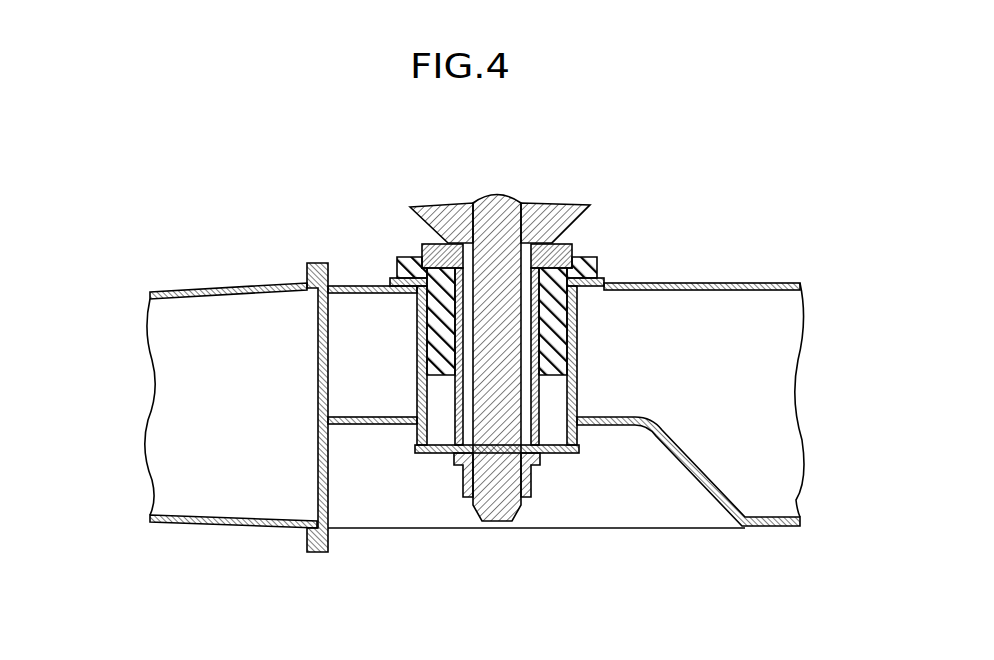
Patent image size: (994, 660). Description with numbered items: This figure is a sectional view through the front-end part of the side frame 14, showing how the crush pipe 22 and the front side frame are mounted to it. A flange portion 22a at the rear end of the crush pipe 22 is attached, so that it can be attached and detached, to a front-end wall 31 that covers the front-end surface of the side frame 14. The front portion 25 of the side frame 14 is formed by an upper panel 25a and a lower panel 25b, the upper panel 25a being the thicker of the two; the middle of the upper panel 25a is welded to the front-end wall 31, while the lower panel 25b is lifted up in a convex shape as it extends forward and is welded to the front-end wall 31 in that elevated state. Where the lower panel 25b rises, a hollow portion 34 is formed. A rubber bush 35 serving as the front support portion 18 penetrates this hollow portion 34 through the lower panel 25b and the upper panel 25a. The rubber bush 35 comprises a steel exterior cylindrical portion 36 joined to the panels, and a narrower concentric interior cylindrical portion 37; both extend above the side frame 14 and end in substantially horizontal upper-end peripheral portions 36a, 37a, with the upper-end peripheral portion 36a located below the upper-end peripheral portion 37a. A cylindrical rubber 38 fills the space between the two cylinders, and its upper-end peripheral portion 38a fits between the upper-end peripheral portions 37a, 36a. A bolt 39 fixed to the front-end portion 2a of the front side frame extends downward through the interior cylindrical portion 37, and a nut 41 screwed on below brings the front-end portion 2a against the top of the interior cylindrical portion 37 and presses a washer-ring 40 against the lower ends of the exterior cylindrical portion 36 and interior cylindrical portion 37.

The front-end portion 2a is at (425, 216).
The side frame 14 is at (685, 541).
The front support portion 18 is at (404, 347).
The crush pipe 22 is at (256, 286).
The flange portion 22a is at (293, 272).
The front portion 25 is at (770, 547).
The upper panel 25a is at (745, 283).
The lower panel 25b is at (677, 443).
The front-end wall 31 is at (316, 373).
The hollow portion 34 is at (386, 505).
The rubber bush 35 is at (369, 248).
The exterior cylindrical portion 36 is at (579, 318).
The upper-end peripheral portion 36a is at (604, 283).
The interior cylindrical portion 37 is at (541, 395).
The upper-end peripheral portion 37a is at (572, 247).
The cylindrical rubber 38 is at (566, 352).
The upper-end peripheral portion 38a is at (598, 262).
The bolt 39 is at (481, 514).
The washer-ring 40 is at (575, 457).
The nut 41 is at (559, 457).